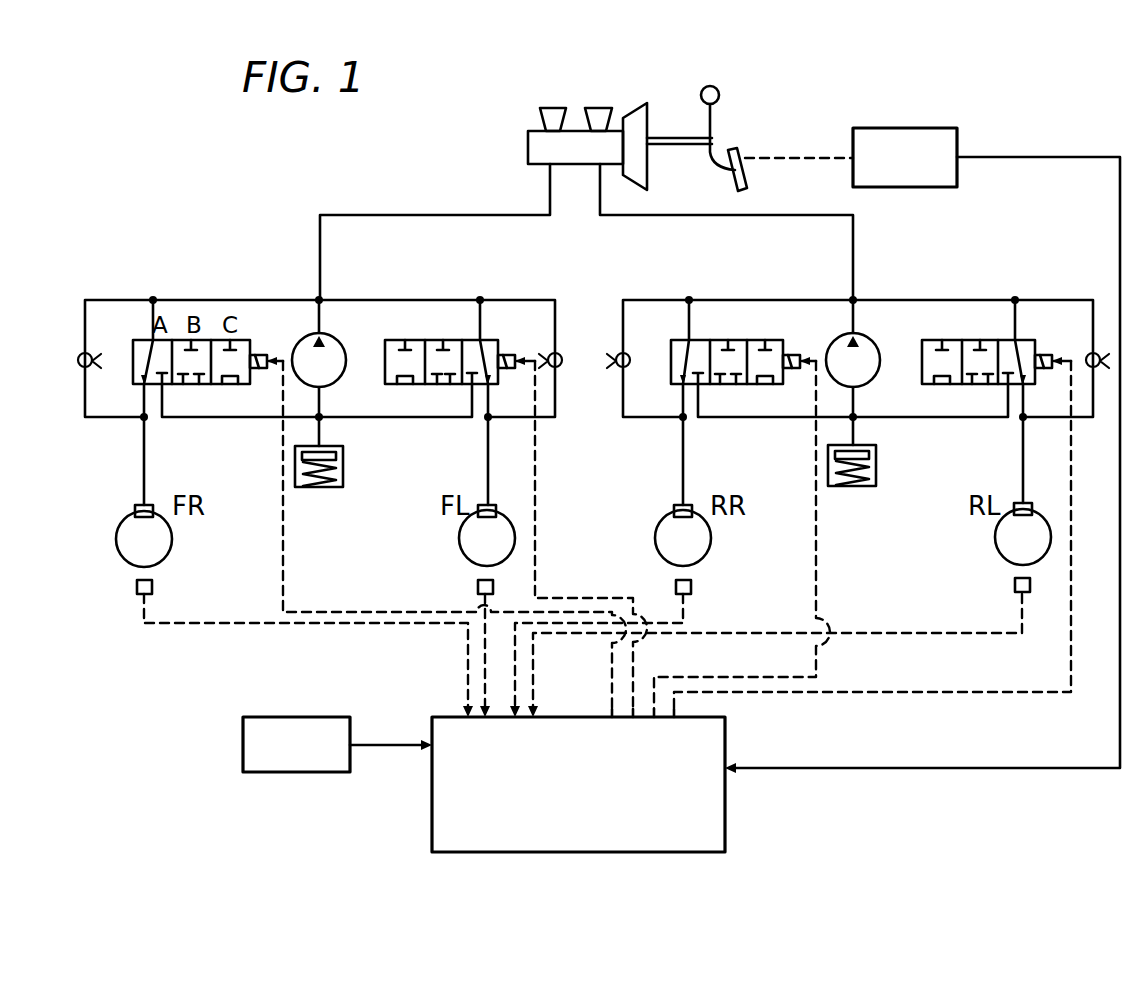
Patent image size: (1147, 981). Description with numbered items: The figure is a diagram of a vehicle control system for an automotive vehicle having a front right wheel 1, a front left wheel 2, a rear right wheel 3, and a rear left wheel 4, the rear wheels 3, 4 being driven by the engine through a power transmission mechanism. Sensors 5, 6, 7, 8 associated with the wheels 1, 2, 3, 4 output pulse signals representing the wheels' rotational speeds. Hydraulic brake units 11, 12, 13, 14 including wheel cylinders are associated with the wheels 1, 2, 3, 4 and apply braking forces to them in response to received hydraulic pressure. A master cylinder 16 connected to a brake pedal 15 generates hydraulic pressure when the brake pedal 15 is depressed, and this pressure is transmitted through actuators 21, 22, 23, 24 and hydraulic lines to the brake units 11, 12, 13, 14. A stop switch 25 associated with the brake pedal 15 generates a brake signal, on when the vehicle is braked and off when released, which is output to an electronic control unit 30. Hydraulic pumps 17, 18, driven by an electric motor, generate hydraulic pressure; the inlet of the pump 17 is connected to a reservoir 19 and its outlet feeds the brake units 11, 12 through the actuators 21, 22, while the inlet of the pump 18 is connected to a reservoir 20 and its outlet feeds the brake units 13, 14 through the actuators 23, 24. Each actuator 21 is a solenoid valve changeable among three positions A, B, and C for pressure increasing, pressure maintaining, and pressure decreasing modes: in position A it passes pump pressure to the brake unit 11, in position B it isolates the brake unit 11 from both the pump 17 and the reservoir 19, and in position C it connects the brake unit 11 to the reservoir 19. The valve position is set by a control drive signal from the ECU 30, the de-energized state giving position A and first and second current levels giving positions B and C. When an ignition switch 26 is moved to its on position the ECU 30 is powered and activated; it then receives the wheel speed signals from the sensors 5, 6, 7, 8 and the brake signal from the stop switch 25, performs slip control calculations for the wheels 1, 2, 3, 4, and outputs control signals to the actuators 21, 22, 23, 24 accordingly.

The front right wheel 1 is at (116, 535).
The front left wheel 2 is at (459, 535).
The rear right wheel 3 is at (656, 535).
The rear left wheel 4 is at (996, 533).
The sensor 5 is at (154, 587).
The sensor 6 is at (477, 587).
The sensor 7 is at (693, 587).
The sensor 8 is at (1014, 585).
The hydraulic brake unit 11 is at (151, 505).
The hydraulic brake unit 12 is at (494, 505).
The hydraulic brake unit 13 is at (692, 505).
The hydraulic brake unit 14 is at (1032, 503).
The brake pedal 15 is at (737, 152).
The master cylinder 16 is at (528, 145).
The hydraulic pump 17 is at (334, 348).
The hydraulic pump 18 is at (871, 346).
The reservoir 19 is at (344, 456).
The reservoir 20 is at (877, 455).
The actuator 21 is at (248, 340).
The actuator 22 is at (490, 342).
The actuator 23 is at (765, 341).
The actuator 24 is at (1026, 342).
The stop switch 25 is at (940, 128).
The ignition switch 26 is at (333, 716).
The electronic control unit 30 is at (727, 733).